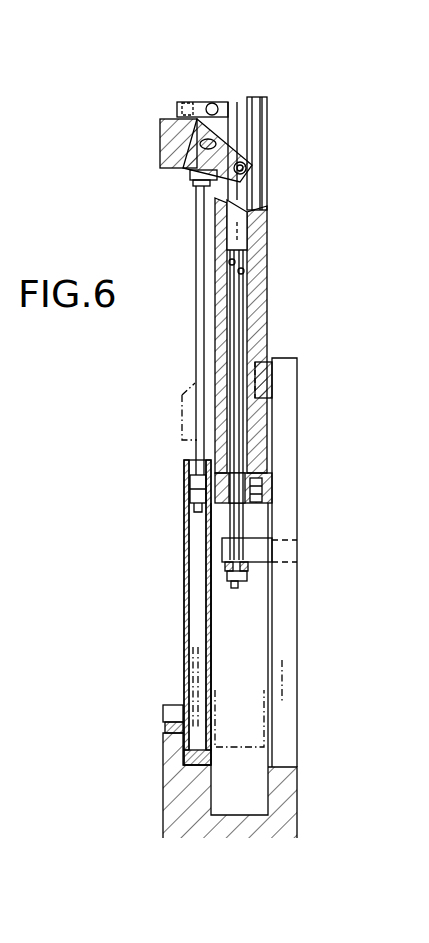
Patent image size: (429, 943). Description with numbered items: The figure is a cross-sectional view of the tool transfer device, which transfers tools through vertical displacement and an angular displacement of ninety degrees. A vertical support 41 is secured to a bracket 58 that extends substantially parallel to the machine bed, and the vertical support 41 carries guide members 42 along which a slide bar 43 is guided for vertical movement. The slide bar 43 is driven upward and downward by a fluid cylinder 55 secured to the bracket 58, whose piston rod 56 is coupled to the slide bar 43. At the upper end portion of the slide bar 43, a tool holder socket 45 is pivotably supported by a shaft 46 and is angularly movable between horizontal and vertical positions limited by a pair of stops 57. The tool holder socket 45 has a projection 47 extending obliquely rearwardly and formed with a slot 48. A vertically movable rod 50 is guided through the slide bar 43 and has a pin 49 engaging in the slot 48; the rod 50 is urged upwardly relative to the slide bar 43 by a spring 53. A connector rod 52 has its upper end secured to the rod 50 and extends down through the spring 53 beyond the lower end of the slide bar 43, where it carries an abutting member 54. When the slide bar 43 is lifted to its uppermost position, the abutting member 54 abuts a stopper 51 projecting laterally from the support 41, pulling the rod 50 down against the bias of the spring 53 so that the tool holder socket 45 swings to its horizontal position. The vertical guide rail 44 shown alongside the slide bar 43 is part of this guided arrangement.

The vertical support 41 is at (287, 626).
The guide members 42 is at (270, 443).
The slide bar 43 is at (265, 258).
The rail 44 is at (266, 143).
The tool holder socket 45 is at (160, 166).
The shaft 46 is at (183, 172).
The projection 47 is at (262, 118).
The slot 48 is at (215, 185).
The pin 49 is at (258, 168).
The vertically movable rod 50 is at (265, 228).
The stopper 51 is at (275, 565).
The connector rod 52 is at (238, 310).
The spring 53 is at (262, 282).
The abutting member 54 is at (225, 580).
The fluid cylinder 55 is at (185, 606).
The piston rod 56 is at (212, 367).
The stops 57 is at (214, 103).
The bracket 58 is at (288, 802).